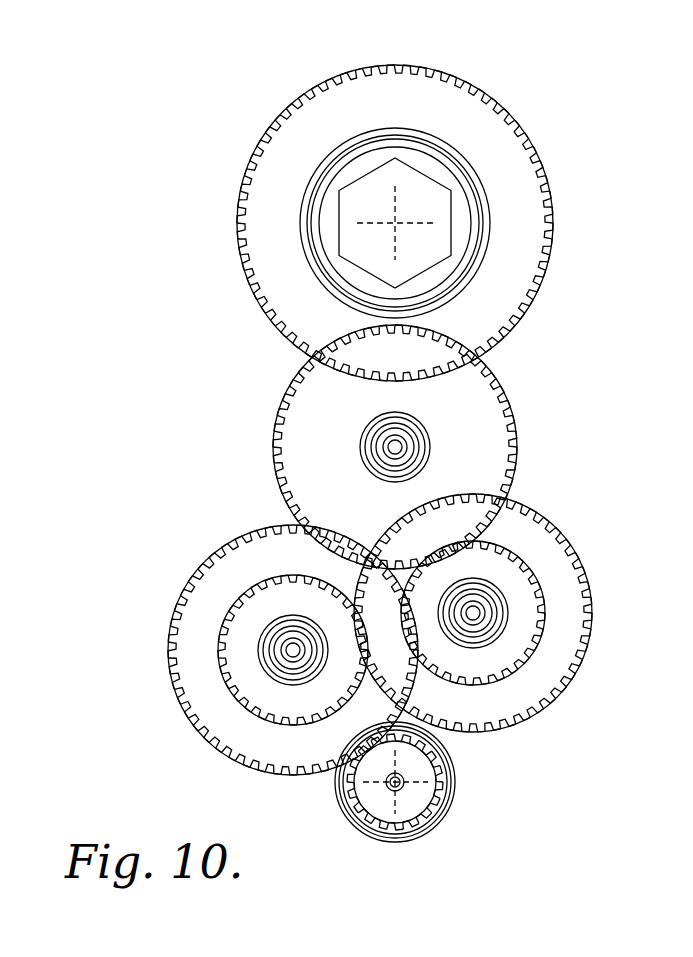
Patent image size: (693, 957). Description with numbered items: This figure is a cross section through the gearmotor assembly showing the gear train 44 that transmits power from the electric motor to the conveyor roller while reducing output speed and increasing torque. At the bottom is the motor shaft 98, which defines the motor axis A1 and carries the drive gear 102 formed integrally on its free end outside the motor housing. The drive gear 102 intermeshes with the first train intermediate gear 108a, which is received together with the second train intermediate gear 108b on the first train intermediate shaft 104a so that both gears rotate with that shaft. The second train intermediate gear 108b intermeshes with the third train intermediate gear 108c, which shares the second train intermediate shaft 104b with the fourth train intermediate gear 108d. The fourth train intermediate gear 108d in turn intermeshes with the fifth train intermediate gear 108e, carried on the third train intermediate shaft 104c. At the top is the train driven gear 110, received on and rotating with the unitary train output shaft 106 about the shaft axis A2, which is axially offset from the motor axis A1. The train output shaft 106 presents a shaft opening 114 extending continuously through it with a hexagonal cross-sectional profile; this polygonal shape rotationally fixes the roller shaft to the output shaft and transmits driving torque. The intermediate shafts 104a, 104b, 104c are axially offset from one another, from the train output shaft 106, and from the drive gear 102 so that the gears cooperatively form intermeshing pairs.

The gear train 44 is at (556, 72).
The train driven gear 110 is at (320, 112).
The train output shaft 106 is at (448, 177).
The shaft opening 114 is at (452, 204).
The shaft axis A2 is at (393, 222).
The fifth train intermediate gear 108e is at (317, 388).
The third train intermediate shaft 104c is at (420, 440).
The first train intermediate gear 108a is at (243, 568).
The second train intermediate gear 108b is at (243, 632).
The first train intermediate shaft 104a is at (290, 653).
The third train intermediate gear 108c is at (565, 610).
The fourth train intermediate gear 108d is at (512, 650).
The second train intermediate shaft 104b is at (493, 598).
The motor shaft 98 is at (427, 790).
The drive gear 102 is at (428, 817).
The motor axis A1 is at (395, 782).